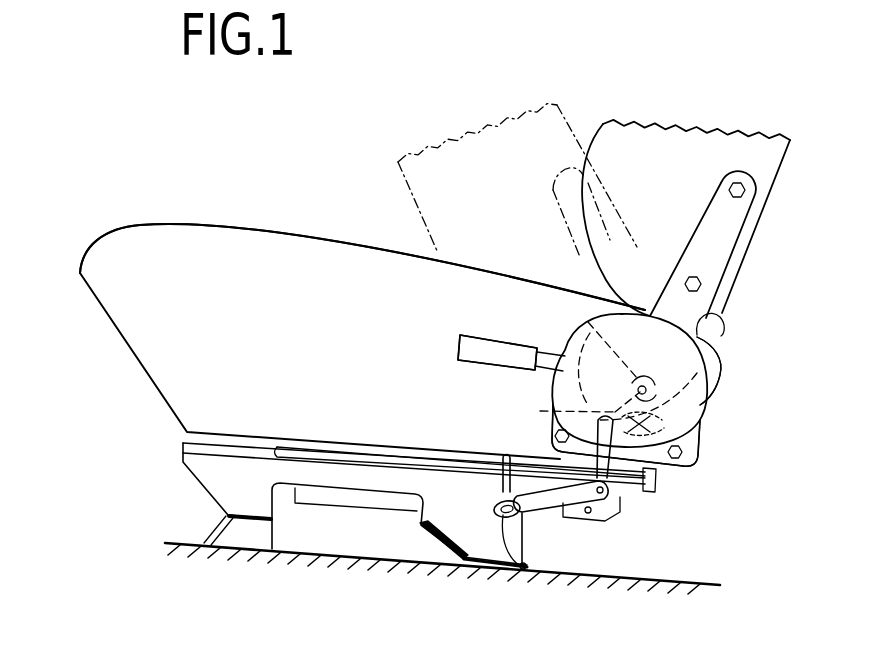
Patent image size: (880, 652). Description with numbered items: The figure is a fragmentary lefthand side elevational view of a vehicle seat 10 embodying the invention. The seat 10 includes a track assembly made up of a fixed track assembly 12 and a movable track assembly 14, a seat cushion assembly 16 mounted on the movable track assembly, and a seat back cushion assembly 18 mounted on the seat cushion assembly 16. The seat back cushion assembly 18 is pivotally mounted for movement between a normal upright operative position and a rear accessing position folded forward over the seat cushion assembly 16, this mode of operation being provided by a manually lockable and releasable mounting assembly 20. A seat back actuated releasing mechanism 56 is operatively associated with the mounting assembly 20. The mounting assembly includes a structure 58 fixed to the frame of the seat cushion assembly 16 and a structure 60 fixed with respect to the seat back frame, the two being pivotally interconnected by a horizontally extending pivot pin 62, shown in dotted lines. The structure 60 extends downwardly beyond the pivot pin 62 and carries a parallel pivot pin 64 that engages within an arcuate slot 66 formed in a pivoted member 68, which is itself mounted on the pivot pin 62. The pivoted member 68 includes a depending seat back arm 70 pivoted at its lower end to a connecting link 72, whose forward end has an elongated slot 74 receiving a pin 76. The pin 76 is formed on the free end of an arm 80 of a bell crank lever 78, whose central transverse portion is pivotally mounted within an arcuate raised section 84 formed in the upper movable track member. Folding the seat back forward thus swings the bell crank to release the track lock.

The vehicle seat 10 is at (270, 188).
The fixed track assembly 12 is at (203, 525).
The movable track assembly 14 is at (651, 495).
The seat cushion assembly 16 is at (137, 370).
The seat back cushion assembly 18 is at (752, 248).
The manually lockable and releasable mounting assembly 20 is at (703, 408).
The seat back actuated releasing mechanism 56 is at (706, 390).
The structure 58 is at (565, 382).
The structure 60 is at (723, 328).
The pivot pin 62 is at (584, 318).
The pivot pin 64 is at (558, 412).
The arcuate slot 66 is at (703, 448).
The pivoted member 68 is at (716, 371).
The seat back arm 70 is at (590, 458).
The connecting link 72 is at (553, 525).
The elongated slot 74 is at (524, 569).
The pin 76 is at (490, 511).
The bell crank lever 78 is at (497, 460).
The arm 80 is at (500, 494).
The arcuate raised section 84 is at (503, 455).